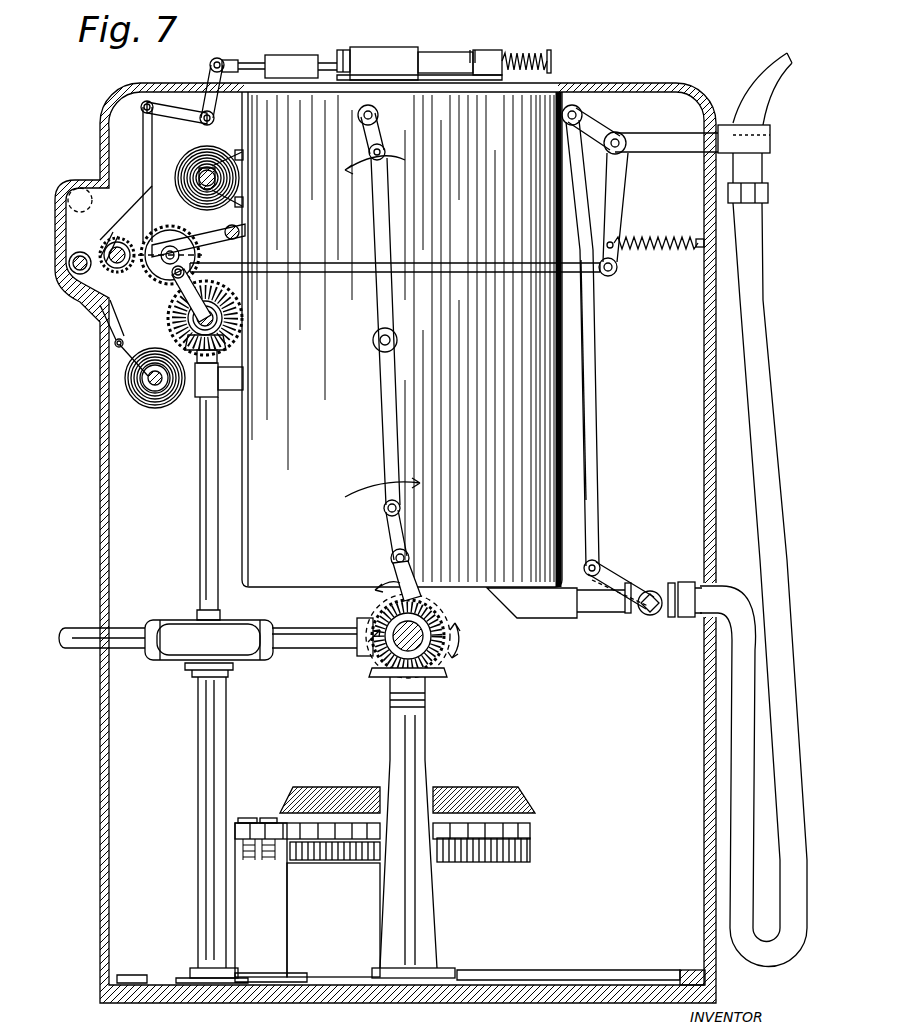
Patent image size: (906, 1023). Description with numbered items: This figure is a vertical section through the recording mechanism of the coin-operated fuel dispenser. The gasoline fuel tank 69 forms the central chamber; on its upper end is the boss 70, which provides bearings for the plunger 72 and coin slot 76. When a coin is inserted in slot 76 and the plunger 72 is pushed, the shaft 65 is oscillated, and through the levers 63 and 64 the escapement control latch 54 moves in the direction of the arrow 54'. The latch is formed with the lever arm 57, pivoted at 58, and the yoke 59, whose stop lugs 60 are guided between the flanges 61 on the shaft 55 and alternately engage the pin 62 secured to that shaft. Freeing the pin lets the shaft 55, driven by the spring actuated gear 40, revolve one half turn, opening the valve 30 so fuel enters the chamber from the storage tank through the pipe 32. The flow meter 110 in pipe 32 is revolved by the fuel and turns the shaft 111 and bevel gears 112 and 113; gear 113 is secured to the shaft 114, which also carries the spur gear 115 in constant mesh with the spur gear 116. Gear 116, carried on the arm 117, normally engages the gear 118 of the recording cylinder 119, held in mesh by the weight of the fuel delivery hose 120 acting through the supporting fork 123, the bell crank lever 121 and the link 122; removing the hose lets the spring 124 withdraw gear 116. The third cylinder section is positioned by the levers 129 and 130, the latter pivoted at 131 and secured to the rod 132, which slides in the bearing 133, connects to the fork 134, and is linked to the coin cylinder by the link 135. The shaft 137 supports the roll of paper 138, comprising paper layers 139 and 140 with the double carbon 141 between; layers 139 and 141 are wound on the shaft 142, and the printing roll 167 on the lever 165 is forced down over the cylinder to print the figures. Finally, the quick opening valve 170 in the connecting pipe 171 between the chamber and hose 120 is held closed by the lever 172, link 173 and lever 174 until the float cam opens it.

The valve 30 is at (357, 650).
The pipe 32 is at (70, 628).
The spring actuated gear 40 is at (515, 795).
The escapement control latch 54 is at (422, 568).
The arrow 54' is at (394, 471).
The shaft 55 is at (425, 625).
The lever arm 57 is at (390, 525).
The pivot 58 is at (392, 557).
The yoke 59 is at (436, 598).
The stop lugs 60 is at (448, 641).
The flanges 61 is at (450, 655).
The pin 62 is at (380, 622).
The lever 63 is at (388, 392).
The lever 64 is at (368, 127).
The shaft 65 is at (378, 112).
The gasoline fuel tank 69 is at (528, 352).
The boss 70 is at (490, 50).
The plunger 72 is at (549, 55).
The slot 76 is at (473, 52).
The flow meter 110 is at (160, 622).
The shaft 111 is at (200, 489).
The bevel gear 112 is at (186, 340).
The bevel gear 113 is at (240, 318).
The shaft 114 is at (238, 325).
The spur gear 115 is at (240, 302).
The spur gear 116 is at (165, 280).
The arm 117 is at (176, 280).
The gear 118 is at (120, 272).
The recording cylinder 119 is at (100, 240).
The fuel delivery hose 120 is at (748, 272).
The bell crank lever 121 is at (612, 196).
The link 122 is at (420, 270).
The supporting fork 123 is at (770, 128).
The spring 124 is at (672, 245).
The lever 129 is at (143, 130).
The lever 130 is at (162, 106).
The pivot 131 is at (204, 120).
The rod 132 is at (255, 60).
The bearing 133 is at (292, 55).
The fork 134 is at (218, 58).
The link 135 is at (348, 48).
The shaft 137 is at (225, 176).
The roll of paper 138 is at (128, 213).
The paper layer 139 is at (115, 343).
The paper layer 140 is at (78, 301).
The double carbon 141 is at (82, 350).
The shaft 142 is at (135, 378).
The lever 165 is at (245, 235).
The printing roll 167 is at (70, 262).
The quick opening valve 170 is at (645, 618).
The connecting pipe 171 is at (583, 618).
The lever 172 is at (610, 578).
The link 173 is at (594, 494).
The lever 174 is at (578, 108).